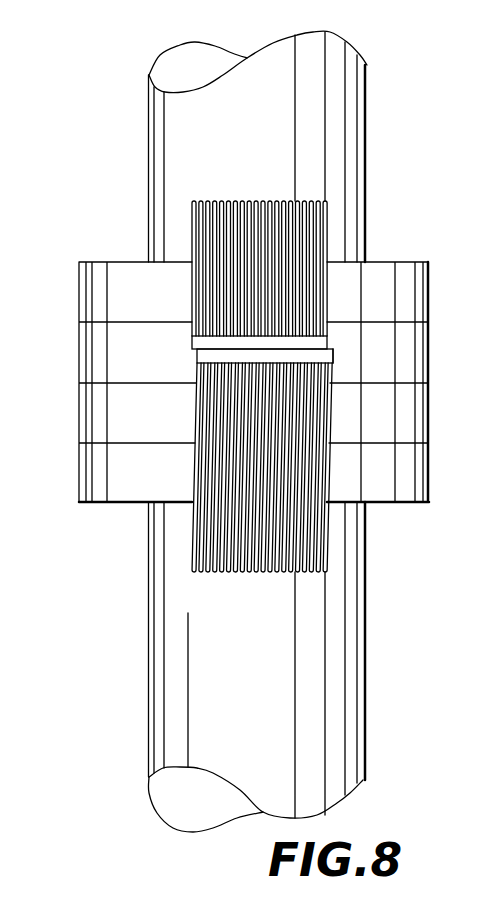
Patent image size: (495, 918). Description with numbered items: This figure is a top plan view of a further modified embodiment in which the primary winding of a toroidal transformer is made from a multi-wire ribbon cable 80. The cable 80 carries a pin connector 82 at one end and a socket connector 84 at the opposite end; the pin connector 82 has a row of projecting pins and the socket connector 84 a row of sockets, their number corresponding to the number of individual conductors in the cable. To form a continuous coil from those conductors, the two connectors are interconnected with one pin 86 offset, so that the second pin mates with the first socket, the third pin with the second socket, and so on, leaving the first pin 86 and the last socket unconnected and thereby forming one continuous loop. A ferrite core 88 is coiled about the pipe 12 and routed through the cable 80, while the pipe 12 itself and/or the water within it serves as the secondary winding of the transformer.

The pipe 12 is at (333, 147).
The ferrite core 88 is at (401, 297).
The pin connector 82 is at (195, 338).
The pin 86 is at (192, 355).
The socket connector 84 is at (326, 356).
The multi-wire ribbon cable 80 is at (192, 550).